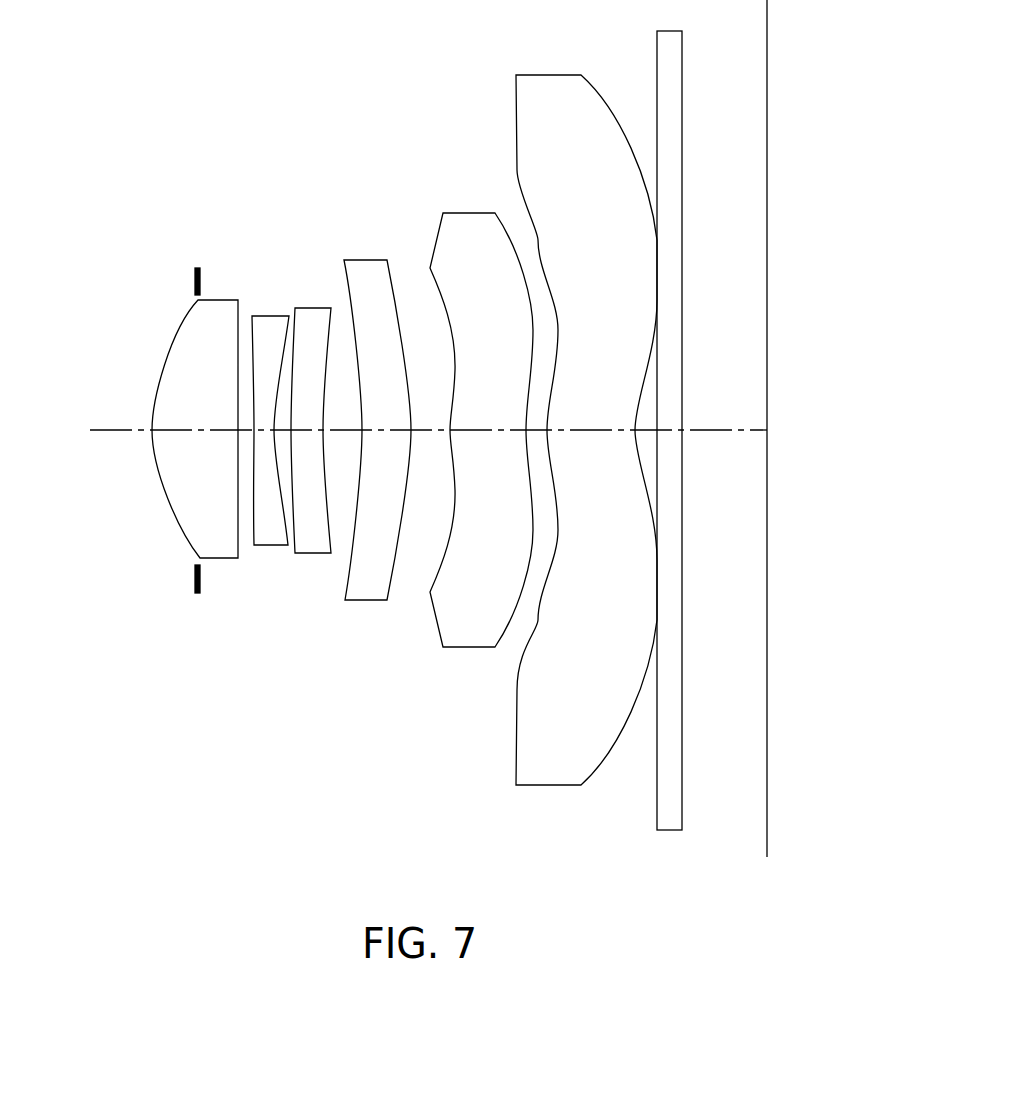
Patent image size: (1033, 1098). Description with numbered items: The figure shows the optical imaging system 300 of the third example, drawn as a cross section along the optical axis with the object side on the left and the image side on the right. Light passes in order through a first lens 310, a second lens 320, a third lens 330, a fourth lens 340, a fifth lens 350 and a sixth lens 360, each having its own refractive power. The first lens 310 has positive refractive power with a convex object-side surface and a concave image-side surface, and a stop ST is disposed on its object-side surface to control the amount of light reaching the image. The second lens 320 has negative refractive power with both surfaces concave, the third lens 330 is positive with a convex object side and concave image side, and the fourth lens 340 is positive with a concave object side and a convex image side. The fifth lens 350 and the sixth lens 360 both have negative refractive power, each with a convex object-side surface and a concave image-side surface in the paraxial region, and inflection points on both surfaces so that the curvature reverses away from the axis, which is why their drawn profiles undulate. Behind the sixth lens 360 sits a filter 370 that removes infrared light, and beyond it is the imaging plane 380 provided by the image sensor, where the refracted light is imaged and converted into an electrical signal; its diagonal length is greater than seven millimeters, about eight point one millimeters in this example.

The optical imaging system 300 is at (302, 135).
The stop ST is at (200, 280).
The first lens 310 is at (218, 561).
The second lens 320 is at (270, 547).
The third lens 330 is at (313, 555).
The fourth lens 340 is at (367, 602).
The fifth lens 350 is at (472, 650).
The sixth lens 360 is at (555, 787).
The filter 370 is at (670, 832).
The imaging plane 380 is at (766, 835).